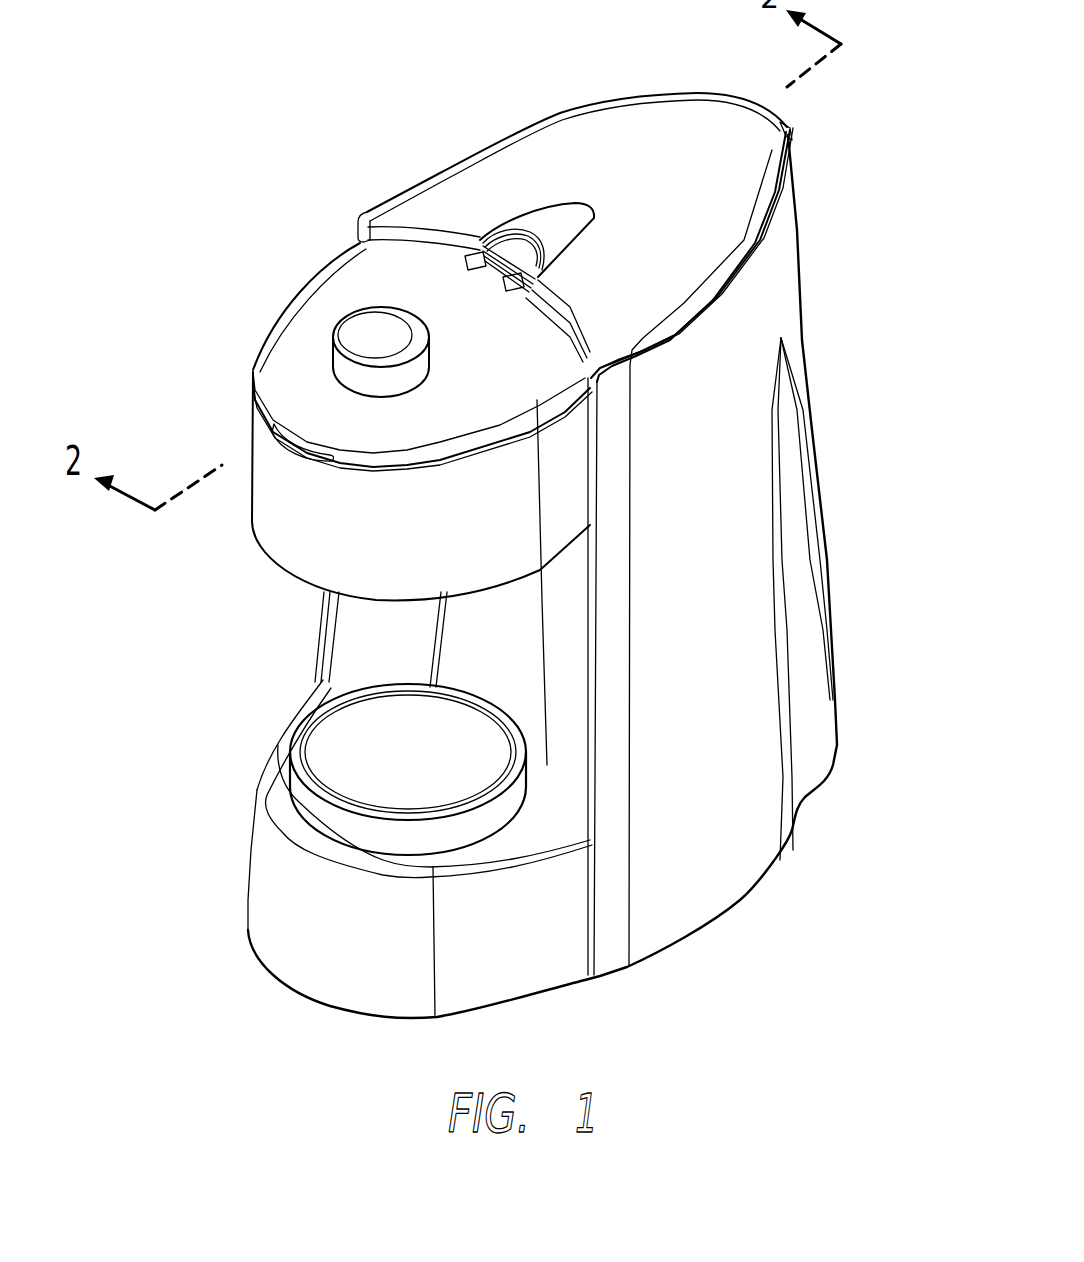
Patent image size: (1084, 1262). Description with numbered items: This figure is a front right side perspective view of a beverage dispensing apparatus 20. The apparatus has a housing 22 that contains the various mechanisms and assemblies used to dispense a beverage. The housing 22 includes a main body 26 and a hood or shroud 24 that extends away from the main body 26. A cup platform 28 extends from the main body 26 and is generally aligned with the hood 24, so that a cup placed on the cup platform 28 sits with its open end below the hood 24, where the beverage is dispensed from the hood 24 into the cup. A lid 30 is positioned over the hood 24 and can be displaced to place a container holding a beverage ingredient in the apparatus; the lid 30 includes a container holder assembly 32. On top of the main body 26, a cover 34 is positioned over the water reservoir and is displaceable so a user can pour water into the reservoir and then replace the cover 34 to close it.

The dispensing apparatus 20 is at (316, 132).
The housing 22 is at (840, 323).
The hood 24 is at (262, 450).
The main body 26 is at (727, 576).
The cup platform 28 is at (338, 770).
The lid 30 is at (290, 368).
The container holder assembly 32 is at (310, 312).
The cover 34 is at (618, 132).